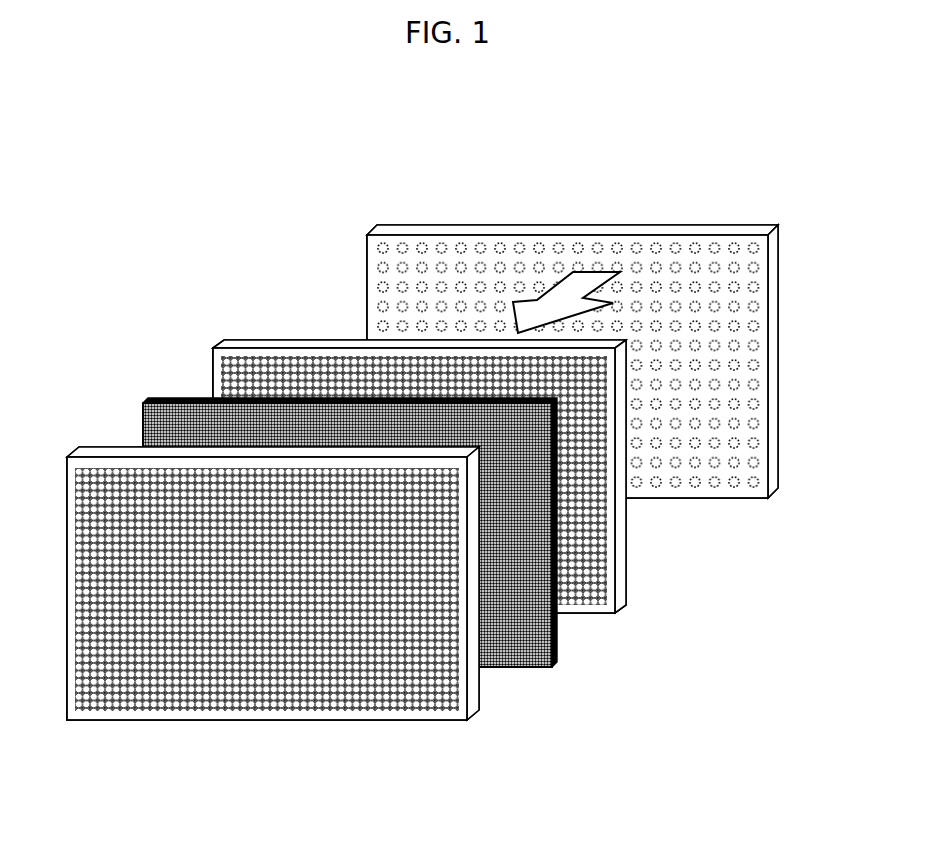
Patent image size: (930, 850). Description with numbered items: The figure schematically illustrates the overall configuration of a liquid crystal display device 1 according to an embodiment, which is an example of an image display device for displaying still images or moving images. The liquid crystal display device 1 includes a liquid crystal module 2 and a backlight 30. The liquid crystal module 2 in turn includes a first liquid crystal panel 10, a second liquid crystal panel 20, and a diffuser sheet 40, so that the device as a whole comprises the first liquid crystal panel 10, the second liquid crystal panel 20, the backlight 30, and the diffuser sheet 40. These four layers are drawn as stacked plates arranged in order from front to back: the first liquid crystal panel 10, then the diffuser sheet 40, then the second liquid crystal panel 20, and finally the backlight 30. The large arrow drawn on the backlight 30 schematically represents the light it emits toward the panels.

The liquid crystal display device 1 is at (200, 272).
The liquid crystal module 2 is at (686, 633).
The first liquid crystal panel 10 is at (470, 721).
The second liquid crystal panel 20 is at (623, 605).
The backlight 30 is at (778, 490).
The diffuser sheet 40 is at (553, 668).